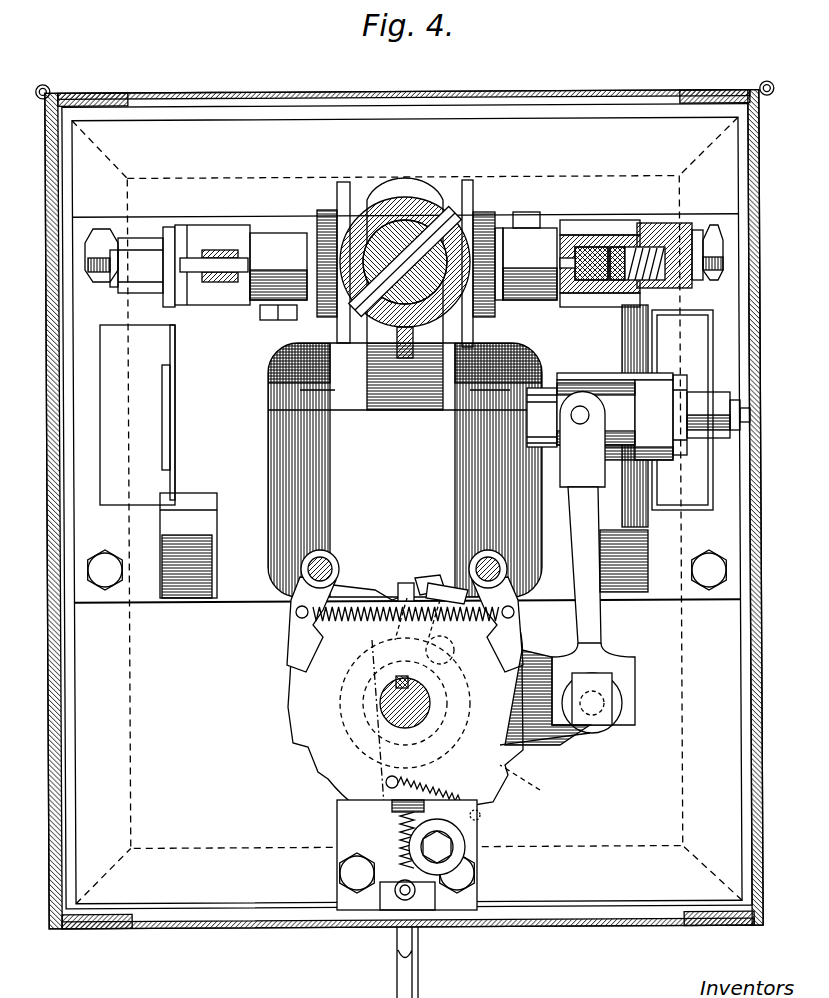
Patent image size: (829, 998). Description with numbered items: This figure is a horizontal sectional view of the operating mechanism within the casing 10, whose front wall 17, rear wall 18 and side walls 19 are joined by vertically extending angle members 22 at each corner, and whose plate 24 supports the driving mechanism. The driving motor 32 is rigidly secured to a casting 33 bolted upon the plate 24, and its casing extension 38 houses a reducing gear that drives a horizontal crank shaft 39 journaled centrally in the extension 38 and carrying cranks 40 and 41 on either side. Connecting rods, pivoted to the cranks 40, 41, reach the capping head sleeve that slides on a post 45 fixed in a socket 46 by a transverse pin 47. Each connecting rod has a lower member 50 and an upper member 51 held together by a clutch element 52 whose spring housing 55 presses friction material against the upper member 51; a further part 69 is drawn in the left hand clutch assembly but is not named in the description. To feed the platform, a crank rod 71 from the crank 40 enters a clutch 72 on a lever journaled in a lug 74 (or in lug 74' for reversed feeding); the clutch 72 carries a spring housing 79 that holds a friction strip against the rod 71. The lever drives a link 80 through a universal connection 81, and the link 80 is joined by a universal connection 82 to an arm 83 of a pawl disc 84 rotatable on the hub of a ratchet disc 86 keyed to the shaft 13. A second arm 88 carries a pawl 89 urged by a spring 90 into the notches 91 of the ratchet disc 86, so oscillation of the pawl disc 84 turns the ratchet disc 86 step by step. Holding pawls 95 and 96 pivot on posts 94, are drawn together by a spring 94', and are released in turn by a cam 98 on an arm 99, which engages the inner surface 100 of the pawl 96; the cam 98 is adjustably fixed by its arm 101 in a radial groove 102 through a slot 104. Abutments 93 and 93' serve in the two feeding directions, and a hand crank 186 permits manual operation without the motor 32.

The casing 10 is at (232, 929).
The shaft 13 is at (390, 711).
The front wall 17 is at (292, 928).
The rear wall 18 is at (520, 84).
The side walls 19 is at (50, 680).
The vertically extending angle members 22 is at (100, 106).
The plate 24 is at (703, 806).
The driving motor 32 is at (333, 458).
The casting 33 is at (250, 604).
The extension 38 is at (430, 192).
The crank shaft 39 is at (307, 302).
The crank 40 is at (545, 292).
The crank 41 is at (252, 302).
The post 45 is at (375, 215).
The socket 46 is at (468, 238).
The transverse pin 47 is at (413, 250).
The lower member 50 is at (572, 240).
The upper member 51 is at (208, 250).
The clutch element 52 is at (213, 298).
The spring housing 55 is at (665, 240).
The pin 69 is at (247, 264).
The crank rod 71 is at (632, 332).
The clutch 72 is at (650, 442).
The lug 74 is at (724, 410).
The journaled lug 74' is at (159, 415).
The spring housing 79 is at (707, 424).
The link 80 is at (600, 652).
The universal connection 81 is at (576, 407).
The universal connection 82 is at (625, 694).
The arm 83 is at (543, 746).
The pawl disc 84 is at (520, 786).
The ratchet disc 86 is at (572, 739).
The second arm 88 is at (375, 787).
The pawl 89 is at (480, 820).
The spring 90 is at (420, 796).
The notches 91 is at (392, 813).
The abutment 93 is at (638, 561).
The abutment 93' is at (205, 545).
The posts 94 is at (434, 552).
The spring 94' is at (406, 632).
The pawl 95 is at (295, 633).
The pawl 96 is at (512, 647).
The cam 98 is at (442, 585).
The arm 99 is at (405, 590).
The inner surface 100 is at (518, 641).
The arm 101 is at (425, 582).
The radial groove 102 is at (393, 600).
The slot 104 is at (420, 633).
The hand crank 186 is at (428, 997).